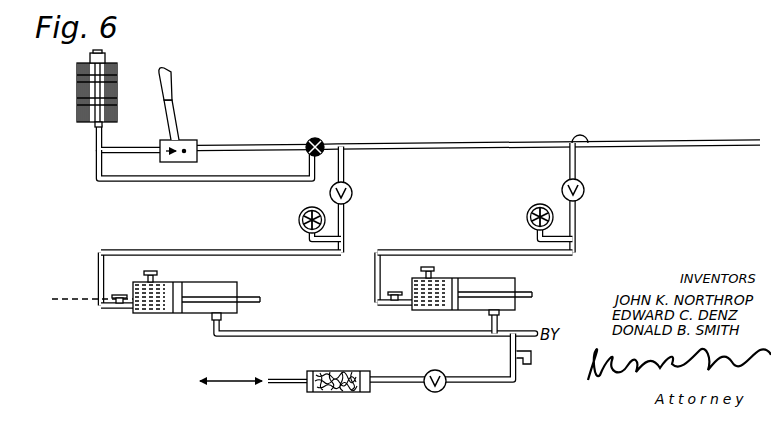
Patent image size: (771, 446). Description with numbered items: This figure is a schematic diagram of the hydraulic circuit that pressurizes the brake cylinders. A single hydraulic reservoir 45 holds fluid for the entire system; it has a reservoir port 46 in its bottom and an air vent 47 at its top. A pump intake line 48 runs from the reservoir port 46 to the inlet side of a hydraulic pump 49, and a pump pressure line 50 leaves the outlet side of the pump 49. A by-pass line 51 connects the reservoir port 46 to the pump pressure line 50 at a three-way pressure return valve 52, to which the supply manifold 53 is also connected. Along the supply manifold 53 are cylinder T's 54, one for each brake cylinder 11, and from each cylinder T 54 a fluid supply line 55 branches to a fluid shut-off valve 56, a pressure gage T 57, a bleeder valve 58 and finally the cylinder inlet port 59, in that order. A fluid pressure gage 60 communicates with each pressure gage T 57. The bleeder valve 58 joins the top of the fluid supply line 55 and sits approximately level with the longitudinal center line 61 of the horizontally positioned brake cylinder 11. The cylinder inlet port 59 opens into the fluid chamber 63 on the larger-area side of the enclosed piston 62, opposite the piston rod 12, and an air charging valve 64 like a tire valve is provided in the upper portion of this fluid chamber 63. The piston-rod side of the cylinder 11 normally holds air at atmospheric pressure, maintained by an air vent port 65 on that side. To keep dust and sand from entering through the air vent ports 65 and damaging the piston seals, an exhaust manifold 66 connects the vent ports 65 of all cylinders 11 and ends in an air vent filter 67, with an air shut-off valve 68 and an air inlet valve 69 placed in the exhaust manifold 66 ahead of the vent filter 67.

The brake cylinder 11 is at (162, 313).
The piston rod 12 is at (192, 307).
The hydraulic reservoir 45 is at (120, 68).
The reservoir port 46 is at (95, 124).
The air vent 47 is at (90, 55).
The pump intake line 48 is at (113, 149).
The hydraulic pump 49 is at (195, 142).
The pump pressure line 50 is at (243, 146).
The by-pass line 51 is at (125, 181).
The pressure return valve 52 is at (309, 139).
The supply manifold 53 is at (486, 142).
The cylinder T 54 is at (348, 147).
The fluid supply line 55 is at (347, 170).
The fluid shut-off valve 56 is at (352, 197).
The pressure gage T 57 is at (347, 240).
The bleeder valve 58 is at (392, 272).
The cylinder inlet port 59 is at (133, 314).
The fluid pressure gage 60 is at (526, 216).
The longitudinal center line 61 is at (62, 299).
The piston 62 is at (185, 290).
The fluid chamber 63 is at (135, 287).
The air charging valve 64 is at (192, 248).
The air vent port 65 is at (220, 318).
The exhaust manifold 66 is at (343, 333).
The air vent filter 67 is at (313, 387).
The air shut-off valve 68 is at (490, 358).
The air inlet valve 69 is at (535, 362).